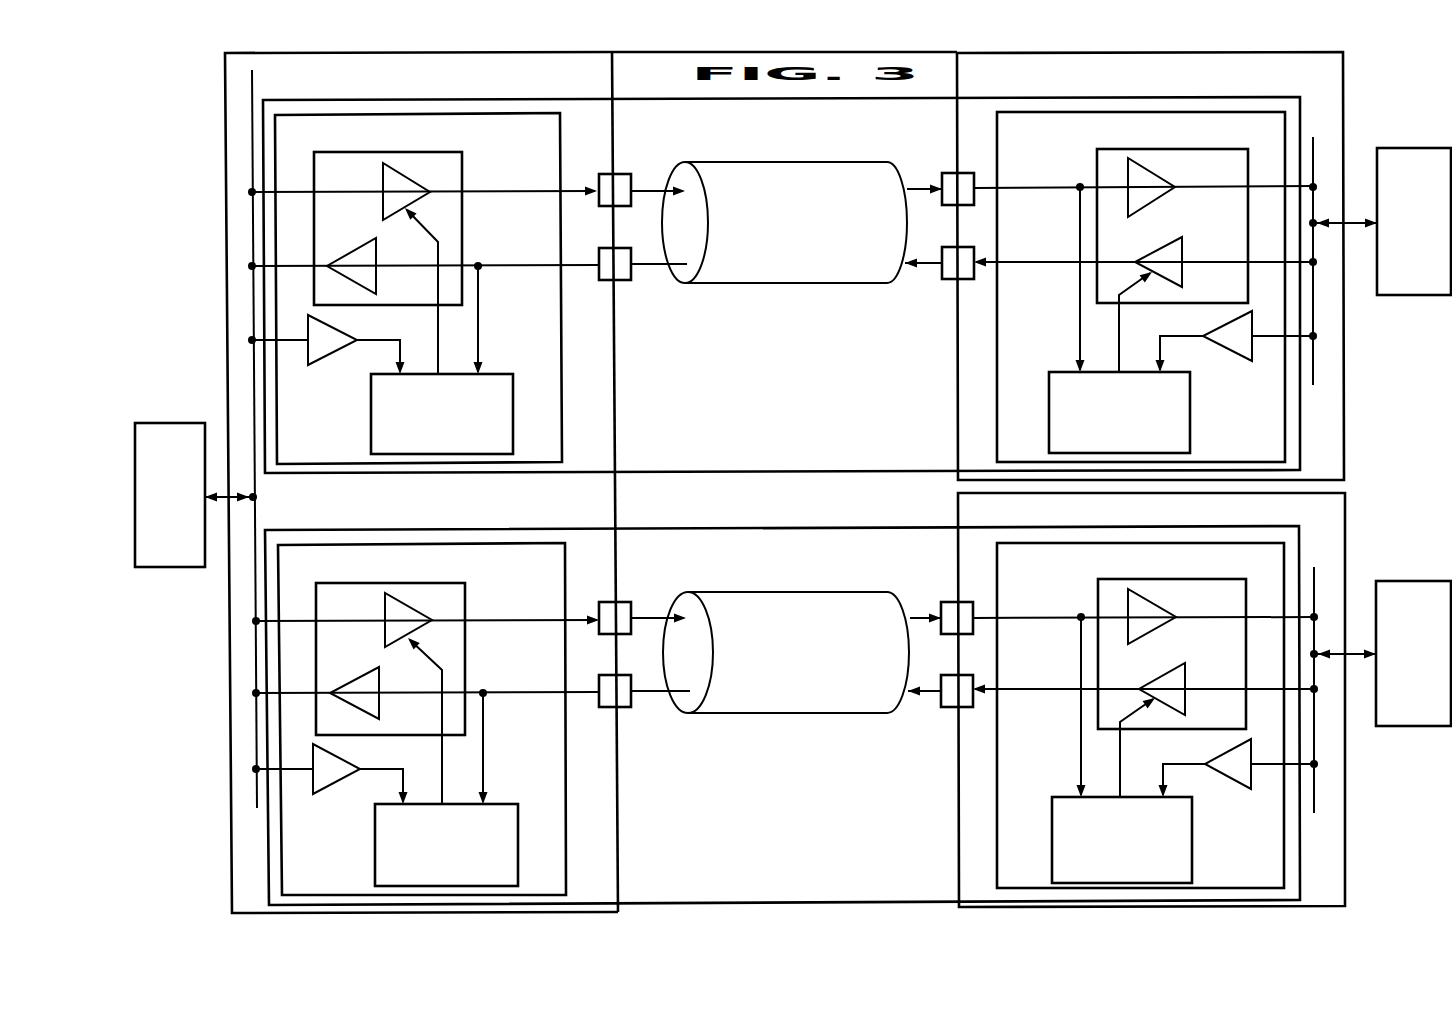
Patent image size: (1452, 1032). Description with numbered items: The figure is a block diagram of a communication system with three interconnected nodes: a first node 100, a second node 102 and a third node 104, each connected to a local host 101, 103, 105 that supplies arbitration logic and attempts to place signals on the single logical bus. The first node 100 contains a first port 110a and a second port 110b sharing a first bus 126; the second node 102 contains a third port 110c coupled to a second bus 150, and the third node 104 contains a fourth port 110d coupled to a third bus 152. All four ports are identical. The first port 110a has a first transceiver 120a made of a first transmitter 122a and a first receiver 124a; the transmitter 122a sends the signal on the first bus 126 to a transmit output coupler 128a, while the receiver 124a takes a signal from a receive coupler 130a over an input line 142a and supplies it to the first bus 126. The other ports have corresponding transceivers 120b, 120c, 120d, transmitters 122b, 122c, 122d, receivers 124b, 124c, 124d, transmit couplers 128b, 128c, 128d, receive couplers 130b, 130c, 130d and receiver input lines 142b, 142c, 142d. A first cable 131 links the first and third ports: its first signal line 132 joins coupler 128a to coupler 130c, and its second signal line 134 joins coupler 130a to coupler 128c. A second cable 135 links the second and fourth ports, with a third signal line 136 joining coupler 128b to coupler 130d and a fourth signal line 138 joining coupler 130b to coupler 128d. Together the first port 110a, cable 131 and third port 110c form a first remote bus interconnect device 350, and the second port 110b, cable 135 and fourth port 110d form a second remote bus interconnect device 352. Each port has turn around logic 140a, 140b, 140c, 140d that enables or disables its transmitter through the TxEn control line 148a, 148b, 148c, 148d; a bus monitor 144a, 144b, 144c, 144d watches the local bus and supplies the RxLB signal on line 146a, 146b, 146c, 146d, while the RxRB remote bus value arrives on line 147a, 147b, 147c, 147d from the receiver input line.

The first node 100 is at (509, 91).
The local host 101 is at (170, 423).
The second node 102 is at (1240, 87).
The local host 103 is at (1420, 148).
The third node 104 is at (1190, 520).
The local host 105 is at (1419, 581).
The first port 110a is at (490, 141).
The second port 110b is at (467, 571).
The third port 110c is at (1198, 140).
The fourth port 110d is at (1198, 569).
The first transceiver 120a is at (507, 188).
The second transceiver 120b is at (507, 617).
The third transceiver 120c is at (1057, 187).
The fourth transceiver 120d is at (1054, 615).
The first transmitter 122a is at (382, 176).
The second transmitter 122b is at (384, 606).
The third transmitter 122c is at (1183, 243).
The fourth transmitter 122d is at (1185, 673).
The first receiver 124a is at (350, 252).
The second receiver 124b is at (350, 681).
The third receiver 124c is at (1162, 172).
The fourth receiver 124d is at (1156, 603).
The first bus 126 is at (254, 95).
The transmit output coupler 128a is at (626, 173).
The second transmit output coupler 128b is at (628, 601).
The third transmit coupler 128c is at (942, 282).
The fourth transmit coupler 128d is at (943, 707).
The receive coupler 130a is at (630, 284).
The second receive coupler 130b is at (632, 708).
The third receive coupler 130c is at (940, 173).
The fourth receive coupler 130d is at (942, 602).
The first cable 131 is at (773, 160).
The first signal line 132 is at (650, 190).
The second signal line 134 is at (658, 283).
The second cable 135 is at (768, 592).
The third signal line 136 is at (650, 618).
The fourth signal line 138 is at (657, 708).
The first turn around logic 140a is at (513, 398).
The second turn around logic 140b is at (518, 818).
The third turn around logic 140c is at (1192, 427).
The fourth turn around logic 140d is at (1197, 859).
The line 142a is at (527, 263).
The line 142b is at (528, 692).
The line 142c is at (1033, 261).
The line 142d is at (1036, 686).
The first bus monitor 144a is at (325, 367).
The second bus monitor 144b is at (328, 797).
The third bus monitor 144c is at (1238, 360).
The fourth bus monitor 144d is at (1237, 790).
The RxLB line 146a is at (395, 350).
The RxLB line 146b is at (402, 778).
The RxLB line 146c is at (1162, 345).
The RxLB line 146d is at (1165, 773).
The RxRB line 147a is at (482, 337).
The RxRB line 147b is at (484, 767).
The RxRB line 147c is at (1078, 333).
The RxRB line 147d is at (1079, 762).
The TxEn line 148a is at (438, 342).
The TxEn line 148b is at (440, 772).
The TxEn line 148c is at (1120, 337).
The TxEn line 148d is at (1123, 767).
The second bus 150 is at (1315, 147).
The third bus 152 is at (1316, 575).
The first remote bus interconnect device 350 is at (803, 442).
The second remote bus interconnect device 352 is at (772, 877).